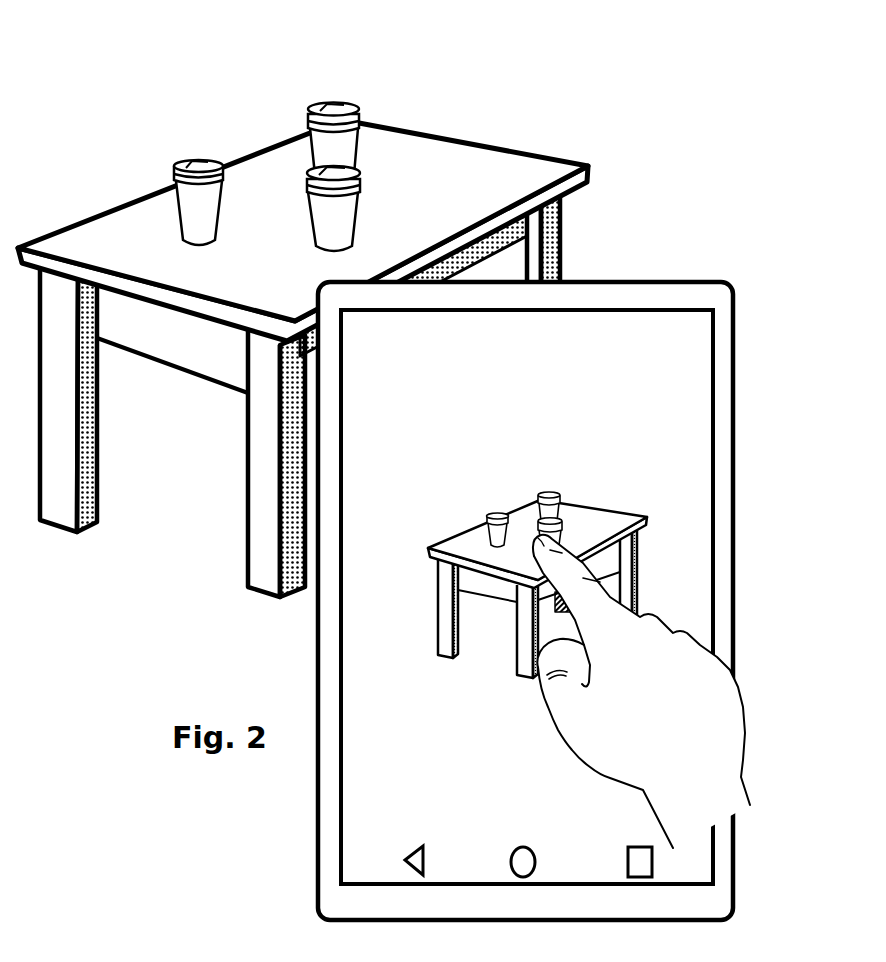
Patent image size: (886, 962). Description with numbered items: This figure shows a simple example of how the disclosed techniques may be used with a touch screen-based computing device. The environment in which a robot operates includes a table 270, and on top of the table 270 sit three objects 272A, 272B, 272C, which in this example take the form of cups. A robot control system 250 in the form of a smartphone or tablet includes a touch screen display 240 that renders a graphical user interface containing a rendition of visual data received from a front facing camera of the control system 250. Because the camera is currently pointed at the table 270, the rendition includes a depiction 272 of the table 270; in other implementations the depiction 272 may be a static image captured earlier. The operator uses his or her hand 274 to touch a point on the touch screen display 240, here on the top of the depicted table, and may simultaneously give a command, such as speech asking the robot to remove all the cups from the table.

The table 270 is at (536, 122).
The object (cup) 272A is at (232, 192).
The object (cup) 272B is at (365, 130).
The object (cup) 272C is at (371, 221).
The robot control system 250 is at (740, 298).
The touch screen display 240 is at (686, 347).
The depiction of table 272 is at (620, 486).
The hand 274 is at (737, 712).